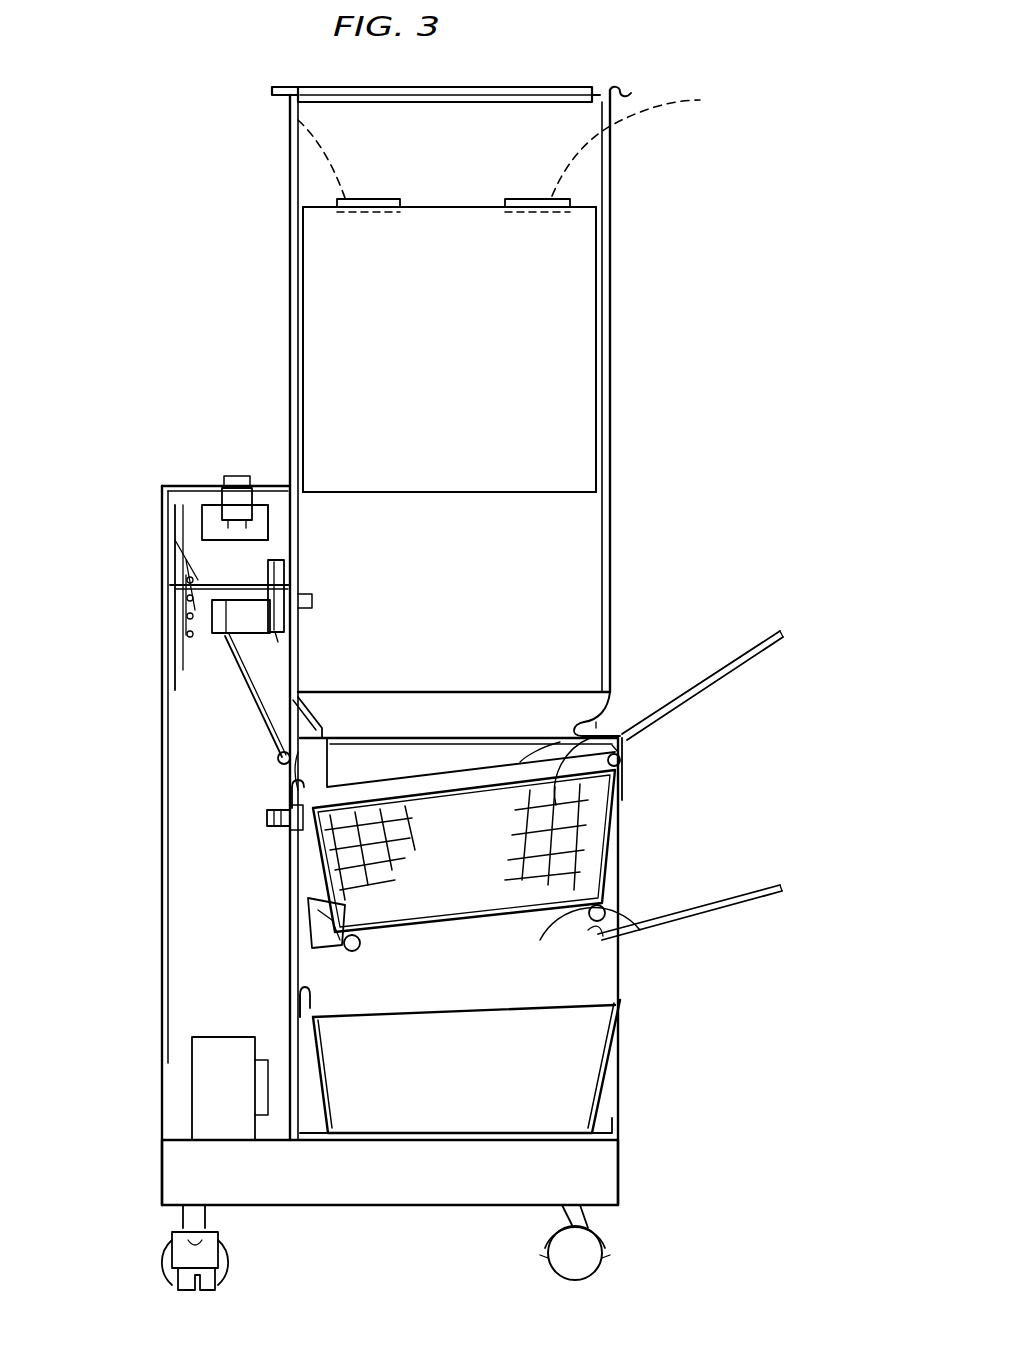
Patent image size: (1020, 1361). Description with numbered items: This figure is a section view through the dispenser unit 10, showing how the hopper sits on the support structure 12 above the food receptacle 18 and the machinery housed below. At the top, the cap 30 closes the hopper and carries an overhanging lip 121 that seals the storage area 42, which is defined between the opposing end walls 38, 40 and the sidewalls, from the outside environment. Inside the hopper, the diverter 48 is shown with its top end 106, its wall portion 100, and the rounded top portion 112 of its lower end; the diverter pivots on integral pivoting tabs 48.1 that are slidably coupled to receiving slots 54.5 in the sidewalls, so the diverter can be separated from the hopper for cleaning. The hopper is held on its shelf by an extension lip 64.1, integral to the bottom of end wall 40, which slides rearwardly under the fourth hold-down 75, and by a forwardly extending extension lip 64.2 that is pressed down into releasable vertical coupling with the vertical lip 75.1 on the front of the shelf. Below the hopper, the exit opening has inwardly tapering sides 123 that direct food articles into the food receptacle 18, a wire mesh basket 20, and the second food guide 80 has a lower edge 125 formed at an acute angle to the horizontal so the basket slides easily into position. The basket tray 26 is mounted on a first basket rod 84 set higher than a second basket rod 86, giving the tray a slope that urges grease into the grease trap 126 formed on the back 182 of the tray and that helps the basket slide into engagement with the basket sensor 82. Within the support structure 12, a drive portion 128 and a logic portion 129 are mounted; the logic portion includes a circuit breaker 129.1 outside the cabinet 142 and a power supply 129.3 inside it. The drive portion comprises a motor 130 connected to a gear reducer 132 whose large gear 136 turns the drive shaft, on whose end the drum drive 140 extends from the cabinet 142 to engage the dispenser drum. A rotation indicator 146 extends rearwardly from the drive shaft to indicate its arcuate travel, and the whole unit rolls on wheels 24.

The dispenser unit 10 is at (628, 186).
The support structure 12 is at (621, 1092).
The food receptacle 18 is at (600, 812).
The wire mesh basket 20 is at (318, 875).
The wheels 24 is at (182, 1248).
The basket tray 26 is at (605, 940).
The cap 30 is at (500, 88).
The end wall 38 is at (298, 338).
The end wall 40 is at (614, 382).
The storage area 42 is at (518, 182).
The diverter 48 is at (565, 330).
The pivoting tabs 48.1 is at (343, 199).
The receiving slots 54.5 is at (298, 125).
The extension lip 64.1 is at (292, 768).
The forwardly extending extension lip 64.2 is at (618, 775).
The fourth hold-down 75 is at (284, 752).
The vertical lip 75.1 is at (620, 762).
The second food guide 80 is at (373, 782).
The basket sensor 82 is at (267, 816).
The first basket rod 84 is at (615, 905).
The second basket rod 86 is at (335, 905).
The vessel right wall 100 is at (572, 440).
The top end 106 is at (312, 240).
The rounded top portion 112 is at (562, 500).
The overhanging lip 121 is at (612, 95).
The inwardly tapering sides 123 is at (614, 700).
The lower edge 125 is at (608, 728).
The grease trap 126 is at (318, 988).
The drive portion 128 is at (298, 546).
The logic portion 129 is at (268, 512).
The circuit breaker 129.1 is at (230, 470).
The power supply 129.3 is at (208, 1072).
The motor 130 is at (195, 628).
The gear reducer 132 is at (275, 636).
The large gear 136 is at (282, 588).
The drum drive 140 is at (312, 600).
The cabinet 142 is at (252, 488).
The rotation indicator 146 is at (175, 535).
The back 182 is at (330, 940).